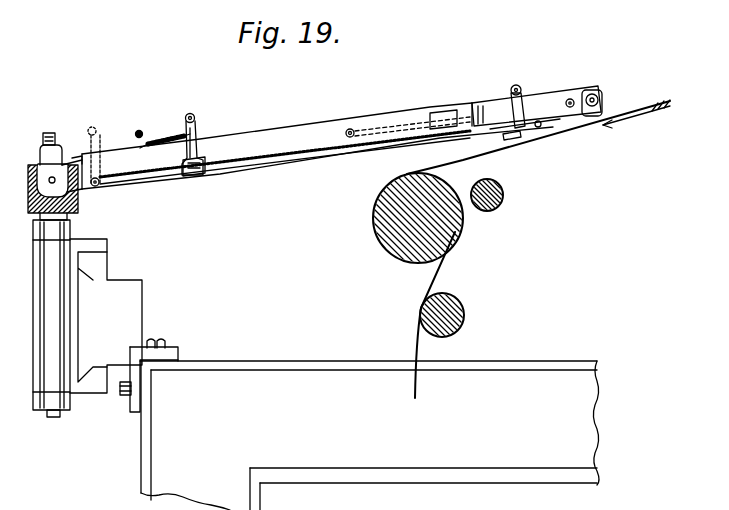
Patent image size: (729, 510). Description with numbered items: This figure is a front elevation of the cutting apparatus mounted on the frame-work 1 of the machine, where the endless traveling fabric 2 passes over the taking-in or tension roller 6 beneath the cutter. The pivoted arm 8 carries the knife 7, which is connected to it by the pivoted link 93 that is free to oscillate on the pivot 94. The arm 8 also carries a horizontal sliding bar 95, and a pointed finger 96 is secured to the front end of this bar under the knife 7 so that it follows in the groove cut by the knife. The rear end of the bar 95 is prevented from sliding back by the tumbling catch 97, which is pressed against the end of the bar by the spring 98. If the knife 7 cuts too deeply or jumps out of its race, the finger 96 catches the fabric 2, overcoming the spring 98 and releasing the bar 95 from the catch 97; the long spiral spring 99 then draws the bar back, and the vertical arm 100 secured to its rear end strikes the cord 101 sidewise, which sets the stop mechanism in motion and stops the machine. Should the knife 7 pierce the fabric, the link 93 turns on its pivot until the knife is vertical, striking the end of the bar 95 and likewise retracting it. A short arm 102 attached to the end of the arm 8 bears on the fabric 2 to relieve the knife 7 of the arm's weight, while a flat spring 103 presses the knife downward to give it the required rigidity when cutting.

The frame-work 1 is at (359, 424).
The endless traveling fabric 2 is at (669, 109).
The taking-in or tension roller 6 is at (377, 226).
The knife 7 is at (541, 127).
The arm 8 is at (303, 135).
The pivoted link 93 is at (536, 106).
The pivot 94 is at (523, 91).
The horizontal sliding bar 95 is at (344, 157).
The pointed finger 96 is at (512, 138).
The tumbling catch 97 is at (184, 160).
The spring 98 is at (169, 140).
The long spiral spring 99 is at (247, 170).
The vertical arm 100 is at (195, 117).
The cord 101 is at (143, 123).
The short arm 102 is at (603, 100).
The flat spring 103 is at (548, 118).